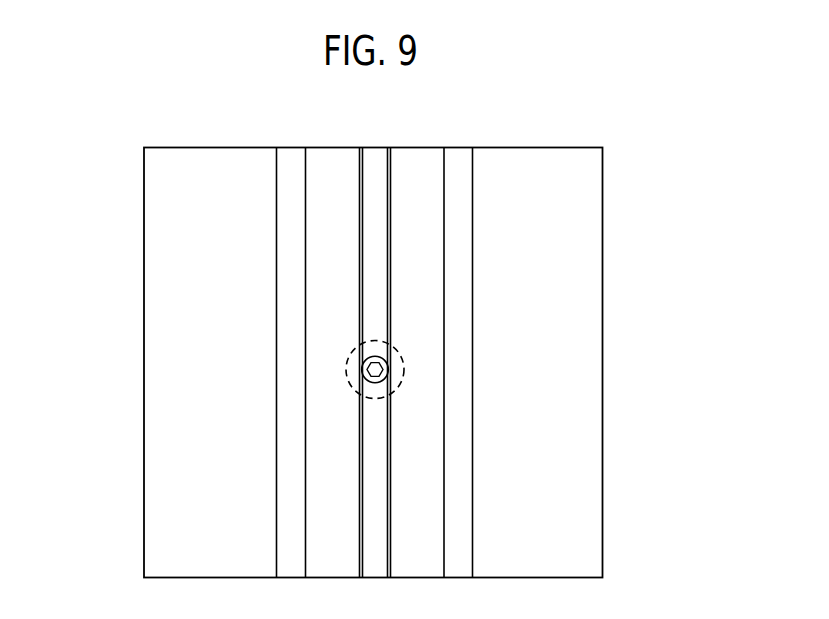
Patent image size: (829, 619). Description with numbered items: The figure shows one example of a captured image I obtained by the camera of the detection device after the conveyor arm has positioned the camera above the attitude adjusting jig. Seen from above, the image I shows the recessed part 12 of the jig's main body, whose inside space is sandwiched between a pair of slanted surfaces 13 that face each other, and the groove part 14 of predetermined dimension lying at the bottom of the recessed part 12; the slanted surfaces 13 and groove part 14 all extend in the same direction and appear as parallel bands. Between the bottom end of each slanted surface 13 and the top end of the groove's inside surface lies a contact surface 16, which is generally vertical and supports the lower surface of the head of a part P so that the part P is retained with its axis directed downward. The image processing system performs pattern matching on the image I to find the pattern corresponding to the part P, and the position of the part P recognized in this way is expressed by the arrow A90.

The captured image I is at (83, 229).
The recessed part 12 is at (324, 176).
The slanted surfaces 13 is at (415, 438).
The groove part 14 is at (374, 176).
The contact surface 16 is at (362, 502).
The part P is at (391, 369).
The arrow indicating the detected position of the part A90 is at (400, 353).